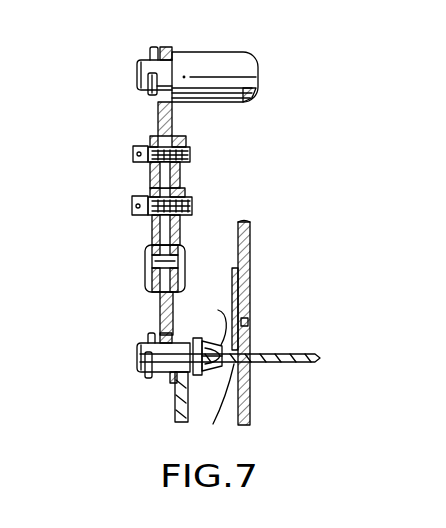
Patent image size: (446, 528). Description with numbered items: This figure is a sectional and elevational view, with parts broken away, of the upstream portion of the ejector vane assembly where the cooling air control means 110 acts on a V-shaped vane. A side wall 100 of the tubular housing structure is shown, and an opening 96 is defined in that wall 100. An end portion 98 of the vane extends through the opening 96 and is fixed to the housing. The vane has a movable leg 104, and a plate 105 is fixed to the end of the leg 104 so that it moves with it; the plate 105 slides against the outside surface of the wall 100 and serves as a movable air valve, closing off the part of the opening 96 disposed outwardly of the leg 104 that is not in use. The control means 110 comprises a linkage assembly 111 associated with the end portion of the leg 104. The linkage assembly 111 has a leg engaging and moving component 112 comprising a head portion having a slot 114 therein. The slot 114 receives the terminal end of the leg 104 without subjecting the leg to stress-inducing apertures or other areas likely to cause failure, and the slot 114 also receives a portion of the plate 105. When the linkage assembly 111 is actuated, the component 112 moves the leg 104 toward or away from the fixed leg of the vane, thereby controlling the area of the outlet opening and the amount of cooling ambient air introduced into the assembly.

The opening 96 is at (246, 327).
The end portion 98 is at (212, 409).
The wall 100 is at (248, 246).
The leg 104 is at (300, 352).
The plate 105 is at (242, 292).
The cooling air control means 110 is at (125, 130).
The linkage assembly 111 is at (132, 189).
The leg engaging and moving component 112 is at (222, 343).
The slot 114 is at (205, 316).